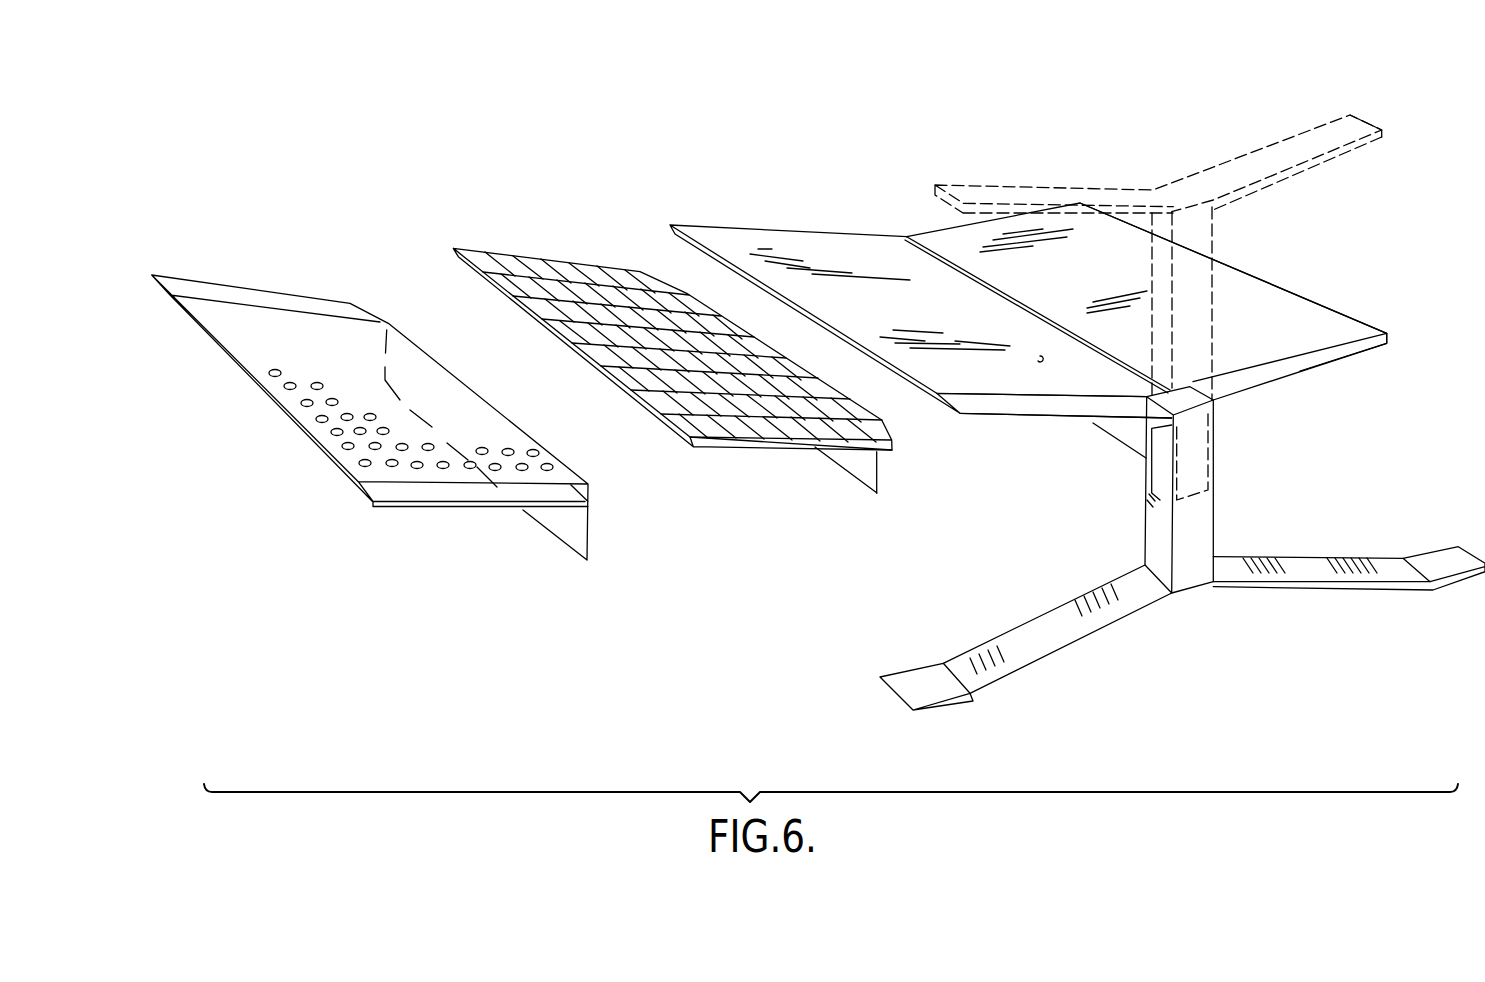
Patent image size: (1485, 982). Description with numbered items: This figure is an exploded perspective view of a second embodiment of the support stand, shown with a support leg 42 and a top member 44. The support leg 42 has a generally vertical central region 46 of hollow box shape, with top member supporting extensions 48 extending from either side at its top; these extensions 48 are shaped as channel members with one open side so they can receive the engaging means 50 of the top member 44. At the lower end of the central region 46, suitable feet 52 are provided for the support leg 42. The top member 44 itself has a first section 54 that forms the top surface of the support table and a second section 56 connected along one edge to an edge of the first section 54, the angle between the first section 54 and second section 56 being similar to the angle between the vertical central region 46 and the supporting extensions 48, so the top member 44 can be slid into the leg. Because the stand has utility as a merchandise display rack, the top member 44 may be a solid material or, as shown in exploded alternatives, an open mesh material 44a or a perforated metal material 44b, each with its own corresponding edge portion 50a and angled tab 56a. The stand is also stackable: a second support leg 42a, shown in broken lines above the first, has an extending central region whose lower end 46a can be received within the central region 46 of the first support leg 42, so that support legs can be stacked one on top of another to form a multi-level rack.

The support leg 42 is at (1182, 377).
The second support leg 42a is at (1318, 118).
The top member 44 is at (1046, 312).
The open mesh material 44a is at (672, 361).
The perforated metal material 44b is at (256, 272).
The central region 46 is at (1160, 526).
The plate edge 46a is at (1217, 263).
The top member supporting extensions 48 is at (1360, 332).
The engaging means 50 is at (941, 405).
The front edge of mesh plate 50a is at (747, 447).
The feet 52 is at (1337, 590).
The first section 54 is at (840, 265).
The second section 56 is at (1130, 433).
The mounting tab of mesh plate 56a is at (857, 465).